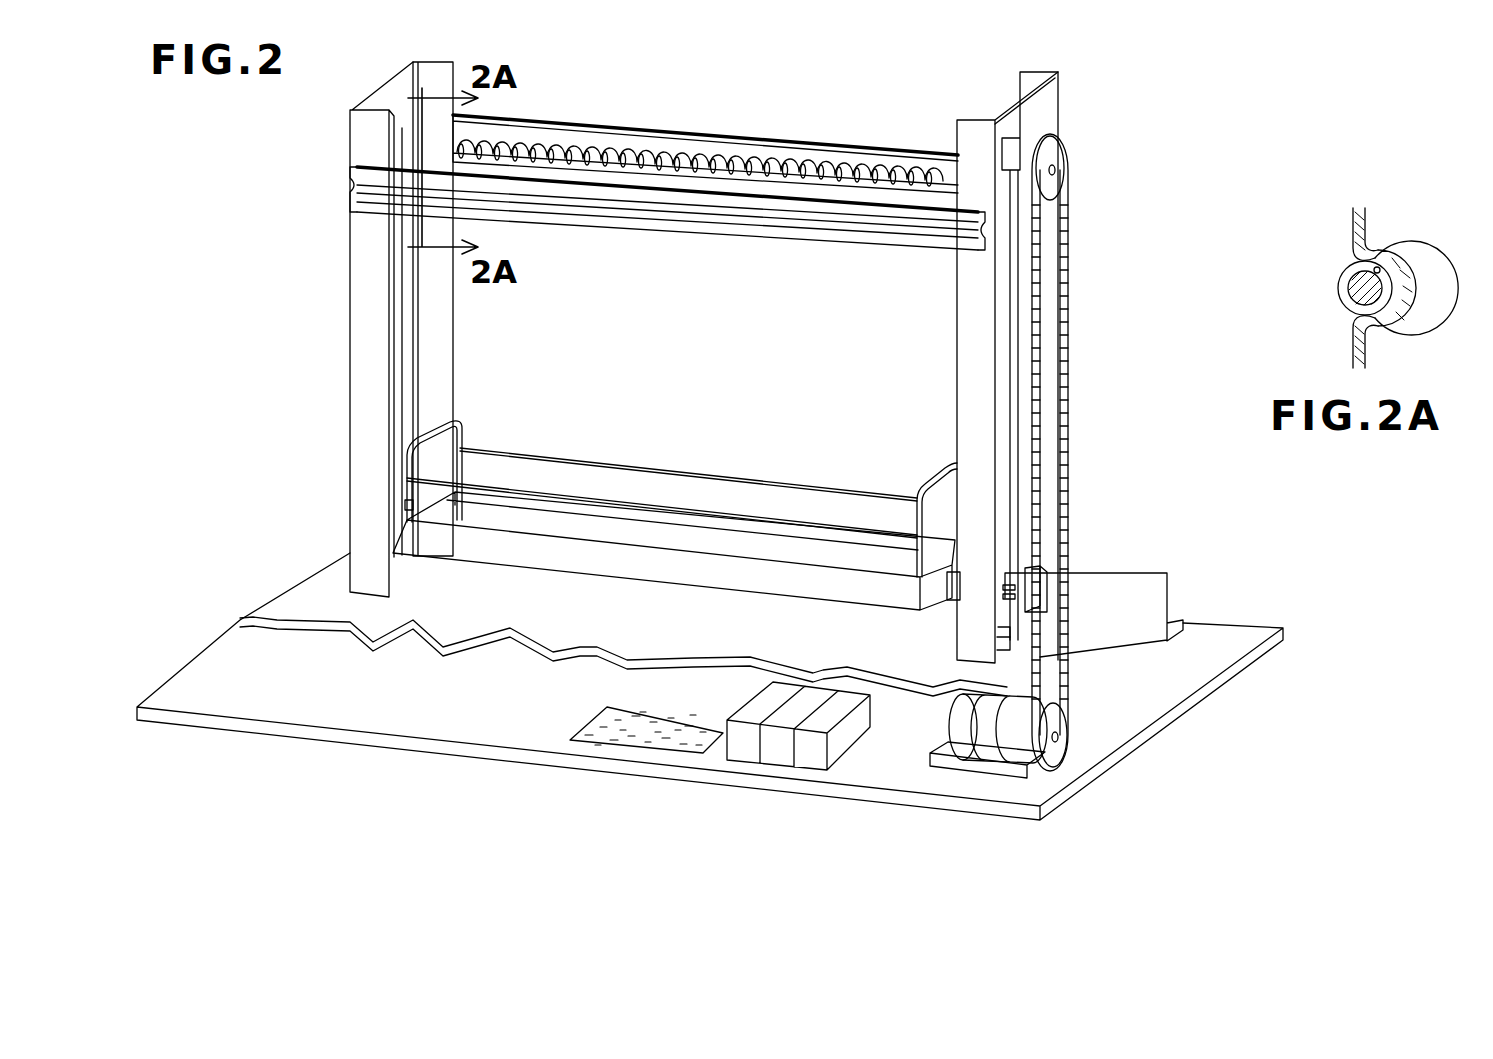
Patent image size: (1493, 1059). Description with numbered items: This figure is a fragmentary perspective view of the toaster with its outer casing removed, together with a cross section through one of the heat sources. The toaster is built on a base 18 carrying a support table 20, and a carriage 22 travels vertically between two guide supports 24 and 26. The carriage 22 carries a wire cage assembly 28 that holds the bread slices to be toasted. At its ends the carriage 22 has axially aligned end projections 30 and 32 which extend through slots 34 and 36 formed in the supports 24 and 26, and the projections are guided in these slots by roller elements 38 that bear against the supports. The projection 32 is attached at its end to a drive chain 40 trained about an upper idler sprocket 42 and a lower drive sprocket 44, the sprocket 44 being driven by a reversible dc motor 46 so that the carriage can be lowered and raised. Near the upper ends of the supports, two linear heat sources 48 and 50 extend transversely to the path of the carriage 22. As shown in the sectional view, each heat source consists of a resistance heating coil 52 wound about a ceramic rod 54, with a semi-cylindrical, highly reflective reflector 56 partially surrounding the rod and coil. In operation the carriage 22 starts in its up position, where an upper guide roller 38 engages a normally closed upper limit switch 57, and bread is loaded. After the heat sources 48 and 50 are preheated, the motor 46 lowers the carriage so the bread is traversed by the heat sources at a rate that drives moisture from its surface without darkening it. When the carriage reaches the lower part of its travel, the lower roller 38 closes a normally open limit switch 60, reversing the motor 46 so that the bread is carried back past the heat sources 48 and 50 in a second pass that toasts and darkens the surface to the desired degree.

In FIG. 2, the base 18 is at (1140, 697).
In FIG. 2, the support table 20 is at (1133, 585).
In FIG. 2, the carriage 22 is at (660, 570).
In FIG. 2, the guide support 24 is at (358, 312).
In FIG. 2, the guide support 26 is at (975, 322).
In FIG. 2, the wire cage assembly 28 is at (644, 500).
In FIG. 2, the end projection 30 is at (410, 480).
In FIG. 2, the end projection 32 is at (952, 594).
In FIG. 2, the slot 34 is at (420, 336).
In FIG. 2, the slot 36 is at (1015, 497).
In FIG. 2, the roller element 38 is at (1005, 590).
In FIG. 2, the drive chain 40 is at (1042, 530).
In FIG. 2, the upper idler sprocket 42 is at (1062, 165).
In FIG. 2, the lower drive sprocket 44 is at (1062, 722).
In FIG. 2, the reversible dc motor 46 is at (950, 723).
In FIG. 2, the linear heat source 48 is at (667, 163).
In FIG. 2, the linear heat source 50 is at (589, 216).
In FIG. 2, the resistance heating coil 52 is at (762, 148).
In FIG. 2A, the resistance heating coil 52 is at (1350, 266).
In FIG. 2A, the ceramic rod 54 is at (1352, 292).
In FIG. 2, the reflector 56 is at (852, 143).
In FIG. 2A, the reflector 56 is at (1393, 252).
In FIG. 2, the upper limit switch 57 is at (1015, 135).
In FIG. 2, the limit switch 60 is at (998, 647).